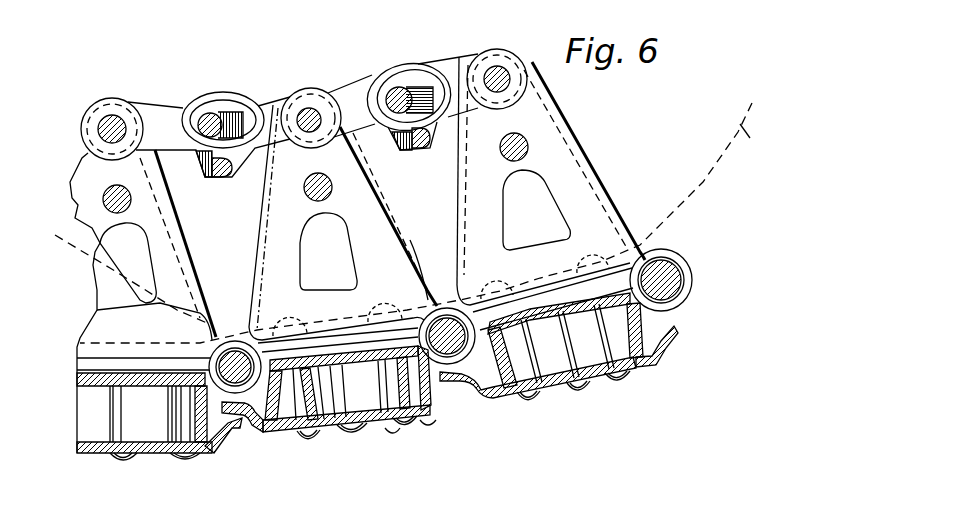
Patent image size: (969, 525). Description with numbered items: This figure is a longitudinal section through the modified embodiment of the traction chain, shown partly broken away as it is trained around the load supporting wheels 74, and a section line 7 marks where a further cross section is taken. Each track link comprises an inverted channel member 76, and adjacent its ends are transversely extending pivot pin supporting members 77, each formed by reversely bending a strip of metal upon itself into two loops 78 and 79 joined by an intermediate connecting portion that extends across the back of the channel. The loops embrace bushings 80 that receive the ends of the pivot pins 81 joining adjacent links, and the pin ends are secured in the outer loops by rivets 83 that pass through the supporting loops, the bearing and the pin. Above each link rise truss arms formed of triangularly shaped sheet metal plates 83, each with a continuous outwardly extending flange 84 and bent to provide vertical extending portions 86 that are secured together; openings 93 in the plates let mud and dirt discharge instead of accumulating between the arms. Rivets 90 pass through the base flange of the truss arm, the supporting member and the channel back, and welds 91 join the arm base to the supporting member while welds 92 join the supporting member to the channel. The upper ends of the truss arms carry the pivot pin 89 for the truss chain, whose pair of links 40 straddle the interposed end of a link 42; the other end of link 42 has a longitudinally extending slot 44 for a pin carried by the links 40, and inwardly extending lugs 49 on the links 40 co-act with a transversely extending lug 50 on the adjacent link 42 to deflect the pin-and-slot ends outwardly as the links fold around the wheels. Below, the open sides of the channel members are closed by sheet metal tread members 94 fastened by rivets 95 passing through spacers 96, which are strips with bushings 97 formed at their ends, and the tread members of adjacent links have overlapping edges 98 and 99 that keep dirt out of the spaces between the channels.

The links 40 is at (158, 112).
The link 42 is at (268, 108).
The longitudinally extending slot 44 is at (223, 110).
The section line 7 is at (312, 67).
The pivot pin 89 is at (313, 110).
The inwardly extending lugs 49 is at (210, 178).
The transversely extending lug 50 is at (220, 177).
The vertical extending portions 86 is at (320, 158).
The continuous flange 84 is at (568, 132).
The triangularly shaped sheet metal plates 83 is at (557, 178).
The load supporting wheels 74 is at (745, 132).
The weld 91 is at (640, 243).
The pivot pins 81 is at (661, 258).
The loop 78 is at (684, 262).
The bushings 80 is at (690, 282).
The weld 92 is at (640, 312).
The openings 93 is at (320, 257).
The rivets 90 is at (258, 313).
The pivot pin supporting members 77 is at (138, 357).
The loop 79 is at (423, 282).
The inverted channel member 76 is at (553, 322).
The spacers 96 is at (150, 427).
The overlapping edge 99 is at (237, 432).
The overlapping edge 98 is at (247, 433).
The sheet metal tread members 94 is at (393, 430).
The rivets 95 is at (427, 428).
The bushings 97 is at (603, 387).